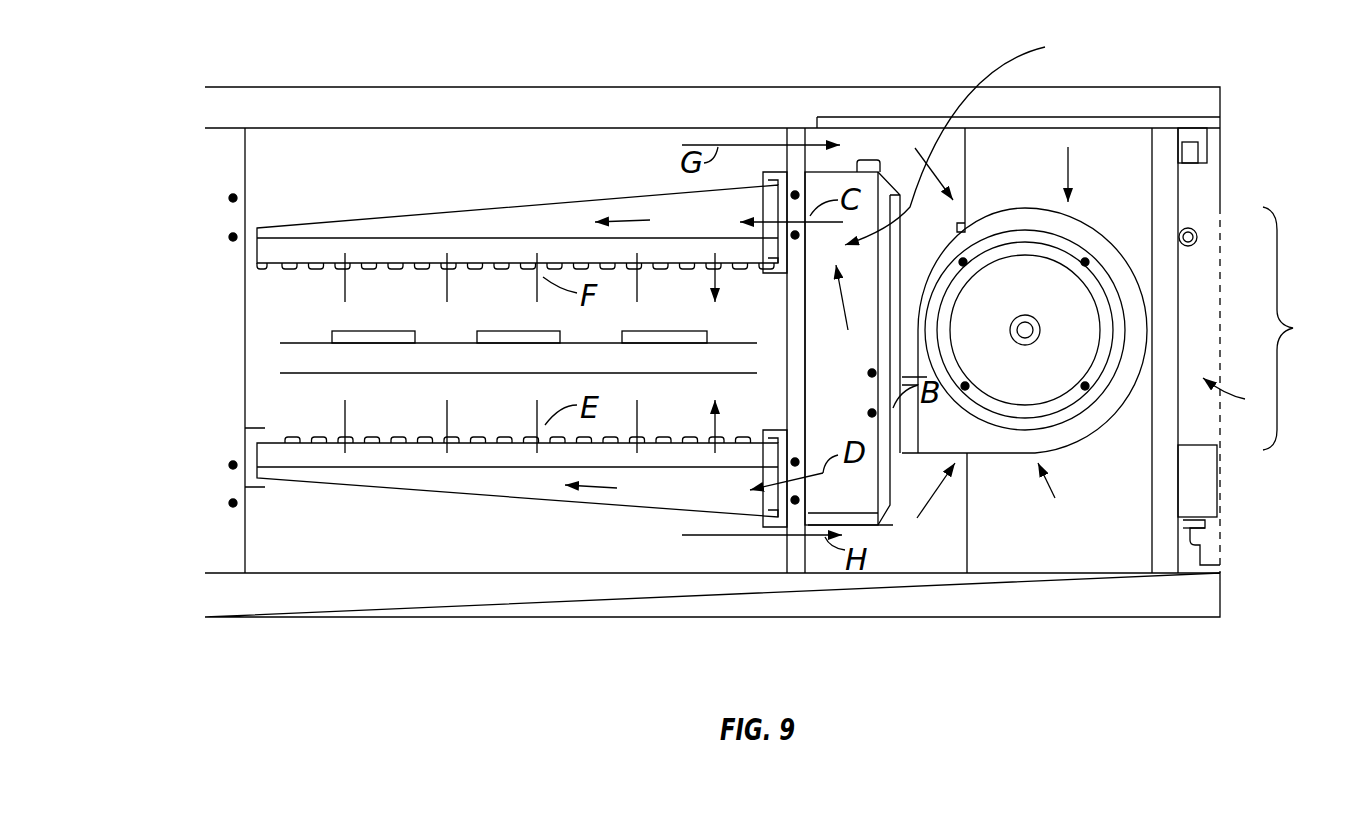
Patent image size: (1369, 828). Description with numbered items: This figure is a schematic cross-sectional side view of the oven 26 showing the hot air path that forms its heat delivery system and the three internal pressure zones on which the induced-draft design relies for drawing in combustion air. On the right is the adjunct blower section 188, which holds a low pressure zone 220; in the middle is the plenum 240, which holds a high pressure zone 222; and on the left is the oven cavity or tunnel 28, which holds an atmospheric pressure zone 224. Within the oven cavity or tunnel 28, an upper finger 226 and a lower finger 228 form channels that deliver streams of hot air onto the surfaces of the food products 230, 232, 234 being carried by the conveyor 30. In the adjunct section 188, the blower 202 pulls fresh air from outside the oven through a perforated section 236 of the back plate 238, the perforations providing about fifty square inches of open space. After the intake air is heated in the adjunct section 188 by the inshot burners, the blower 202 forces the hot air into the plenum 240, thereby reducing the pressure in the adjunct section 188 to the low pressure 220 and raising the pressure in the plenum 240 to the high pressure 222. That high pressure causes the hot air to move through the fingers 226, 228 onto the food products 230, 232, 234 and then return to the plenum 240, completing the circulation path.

The oven 26 is at (495, 618).
The oven cavity or tunnel 28 is at (331, 174).
The conveyor 30 is at (478, 373).
The adjunct blower section 188 is at (1124, 164).
The blower 202 is at (845, 393).
The low pressure zone 220 is at (1147, 544).
The high pressure zone 222 is at (864, 366).
The atmospheric pressure zone 224 is at (676, 569).
The upper finger 226 is at (448, 210).
The lower finger 228 is at (372, 487).
The food product 230 is at (341, 330).
The food product 232 is at (530, 330).
The food product 234 is at (640, 330).
The perforated section 236 is at (1275, 328).
The back plate 238 is at (1222, 150).
The plenum 240 is at (872, 504).